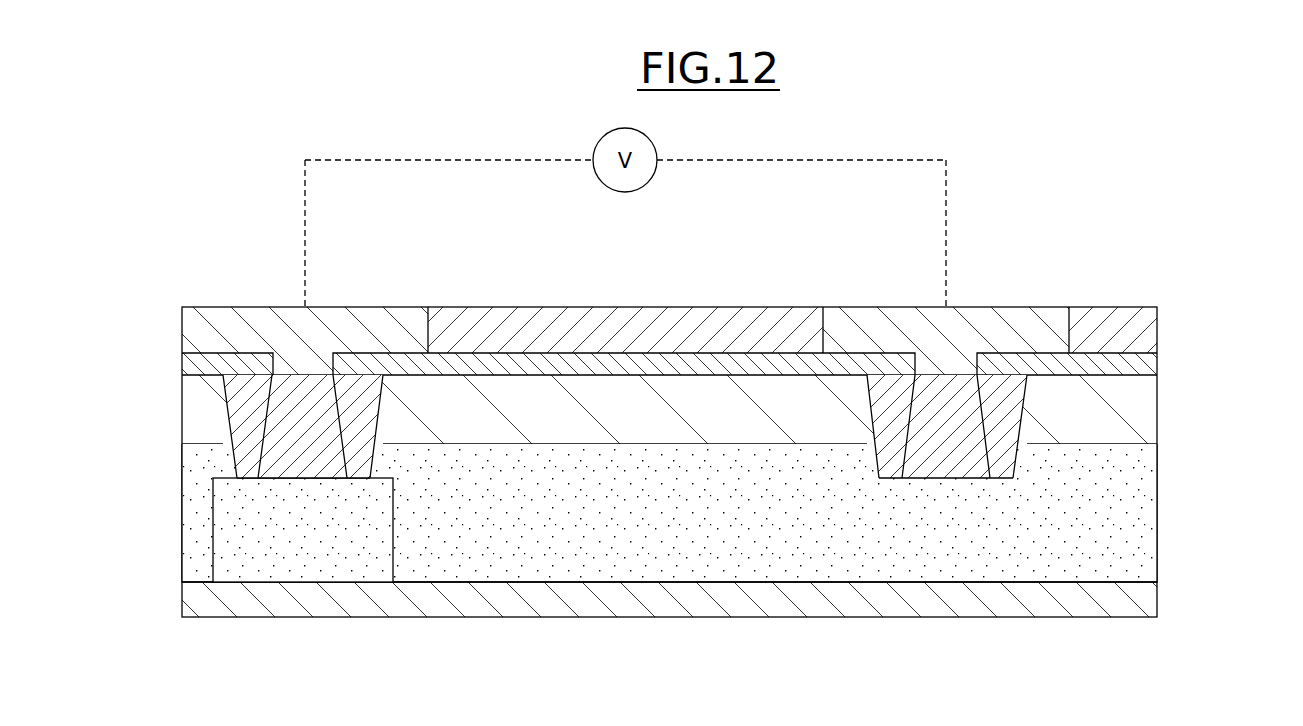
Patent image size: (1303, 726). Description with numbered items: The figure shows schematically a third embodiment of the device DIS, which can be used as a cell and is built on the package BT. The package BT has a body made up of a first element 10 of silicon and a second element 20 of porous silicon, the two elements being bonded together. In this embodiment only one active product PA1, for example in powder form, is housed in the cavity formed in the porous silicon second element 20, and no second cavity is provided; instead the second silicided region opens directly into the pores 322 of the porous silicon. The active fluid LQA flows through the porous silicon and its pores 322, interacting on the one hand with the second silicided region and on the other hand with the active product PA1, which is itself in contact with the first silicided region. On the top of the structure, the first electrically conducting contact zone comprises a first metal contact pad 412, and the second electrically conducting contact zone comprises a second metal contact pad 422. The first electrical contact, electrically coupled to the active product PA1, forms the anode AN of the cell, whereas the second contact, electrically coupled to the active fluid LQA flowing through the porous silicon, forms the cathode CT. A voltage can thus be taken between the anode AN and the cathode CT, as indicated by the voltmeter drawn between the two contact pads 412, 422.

The first element 10 is at (1158, 404).
The second element 20 is at (1153, 563).
The first active product PA1 is at (288, 520).
The pores 322 is at (946, 480).
The first metal contact pad 412 is at (289, 345).
The second metal contact pad 422 is at (998, 345).
The anode AN is at (228, 262).
The cathode CT is at (911, 262).
The package BT is at (1163, 248).
The device DIS is at (1201, 300).
The active fluid LQA is at (213, 531).